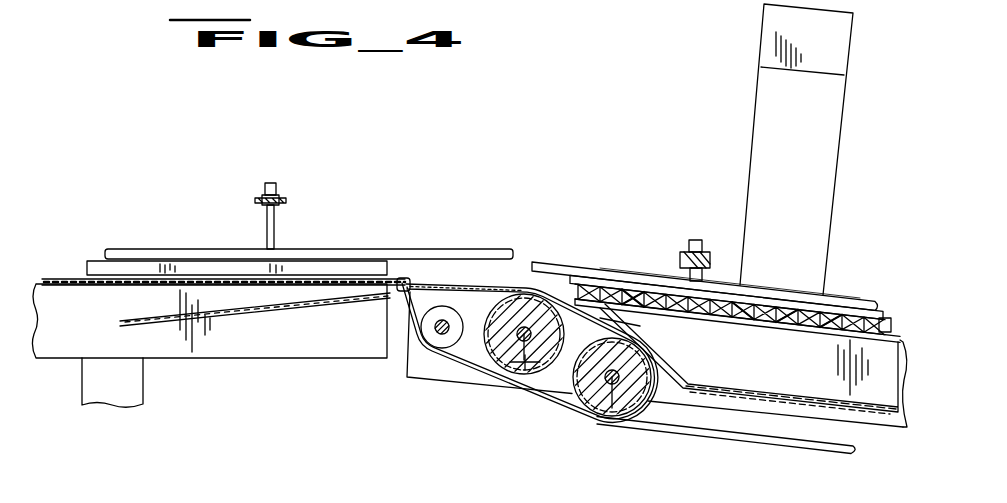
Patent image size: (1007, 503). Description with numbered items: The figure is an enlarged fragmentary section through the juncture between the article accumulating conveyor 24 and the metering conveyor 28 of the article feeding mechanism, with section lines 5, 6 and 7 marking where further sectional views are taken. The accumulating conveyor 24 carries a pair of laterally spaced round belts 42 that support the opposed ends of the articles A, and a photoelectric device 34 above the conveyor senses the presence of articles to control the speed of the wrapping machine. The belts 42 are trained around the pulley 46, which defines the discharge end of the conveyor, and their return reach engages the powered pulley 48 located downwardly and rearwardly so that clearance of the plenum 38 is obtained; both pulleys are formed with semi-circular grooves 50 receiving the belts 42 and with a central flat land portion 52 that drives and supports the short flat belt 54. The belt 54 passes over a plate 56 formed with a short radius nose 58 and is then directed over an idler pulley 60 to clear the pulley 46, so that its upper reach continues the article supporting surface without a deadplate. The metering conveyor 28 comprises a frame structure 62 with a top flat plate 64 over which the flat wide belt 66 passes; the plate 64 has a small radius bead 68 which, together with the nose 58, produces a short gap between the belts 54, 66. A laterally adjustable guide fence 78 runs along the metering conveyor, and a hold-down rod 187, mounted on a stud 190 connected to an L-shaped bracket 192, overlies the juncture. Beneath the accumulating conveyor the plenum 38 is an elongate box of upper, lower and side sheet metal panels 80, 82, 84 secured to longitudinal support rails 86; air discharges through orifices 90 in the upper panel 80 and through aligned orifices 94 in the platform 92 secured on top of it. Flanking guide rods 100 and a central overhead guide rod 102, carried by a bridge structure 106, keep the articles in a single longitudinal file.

The metering conveyor 28 is at (100, 208).
The hold-down rod 187 is at (125, 250).
The L-shaped bracket 192 is at (256, 200).
The stud 190 is at (262, 216).
The laterally adjustable guide fence 78 is at (310, 262).
The flat wide belt 66 is at (66, 286).
The top flat plate 64 is at (208, 321).
The frame structure 62 is at (150, 390).
The small radius bead 68 is at (388, 304).
The short radius nose 58 is at (402, 278).
The plate 56 is at (467, 286).
The idler pulley 60 is at (433, 341).
The longitudinal support rails 86 is at (410, 380).
The circumferential semi-circular spaced grooves 50 is at (487, 388).
The pulley 46 is at (523, 372).
The powered pulley 48 is at (609, 410).
The short flat belt 54 is at (566, 306).
The central flat land portion 52 is at (634, 329).
The flanking guide rods 100 is at (556, 284).
The central overhead guide rod 102 is at (650, 275).
The platform 92 is at (606, 288).
The orifices 94 is at (808, 306).
The articles A is at (764, 306).
The upper sheet metal panel 80 is at (741, 321).
The orifices 90 is at (818, 327).
The belts 42 is at (888, 322).
The side sheet metal panels 84 is at (797, 392).
The lower sheet metal panel 82 is at (738, 392).
The plenum 38 is at (866, 404).
The bridge structure 106 is at (720, 254).
The photoelectric devices 34 is at (773, 31).
The article accumulating conveyor 24 is at (836, 255).
The section line 7 is at (320, 190).
The section line 6 is at (533, 262).
The section line 5 is at (722, 246).